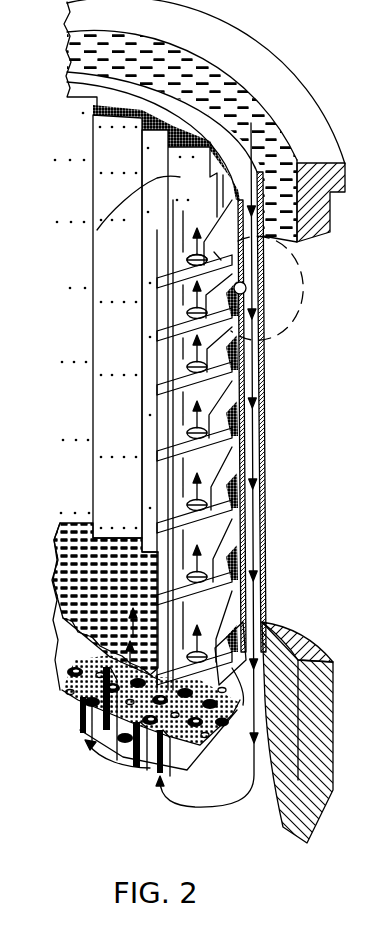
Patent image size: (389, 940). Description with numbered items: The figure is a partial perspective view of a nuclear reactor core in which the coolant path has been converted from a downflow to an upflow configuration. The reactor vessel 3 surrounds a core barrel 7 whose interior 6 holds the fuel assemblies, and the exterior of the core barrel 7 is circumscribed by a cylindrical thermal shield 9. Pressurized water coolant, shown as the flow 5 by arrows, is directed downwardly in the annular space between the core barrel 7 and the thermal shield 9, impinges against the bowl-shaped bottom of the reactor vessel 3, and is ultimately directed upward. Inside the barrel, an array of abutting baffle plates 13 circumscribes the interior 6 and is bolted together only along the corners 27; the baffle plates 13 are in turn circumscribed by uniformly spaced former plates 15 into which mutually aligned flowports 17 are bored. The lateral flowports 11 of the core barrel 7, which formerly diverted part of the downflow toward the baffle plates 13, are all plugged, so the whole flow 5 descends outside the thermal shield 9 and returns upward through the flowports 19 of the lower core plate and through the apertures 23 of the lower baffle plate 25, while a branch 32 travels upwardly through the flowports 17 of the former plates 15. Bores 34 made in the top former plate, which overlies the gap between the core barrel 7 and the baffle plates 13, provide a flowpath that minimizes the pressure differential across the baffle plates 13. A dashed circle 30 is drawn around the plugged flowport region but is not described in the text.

The reactor vessel 3 is at (276, 97).
The flow of liquid coolant 5 is at (261, 137).
The interior of the core barrel 6 is at (80, 330).
The core barrel 7 is at (115, 113).
The thermal shield 9 is at (206, 107).
The lateral flowports 11 is at (247, 291).
The baffle plates 13 is at (153, 193).
The former plates 15 is at (223, 560).
The flowports of the former plates 17 is at (240, 400).
The flowports of the lower core plate 19 is at (140, 760).
The apertures of the lower baffle plate 23 is at (76, 603).
The lower baffle plate 25 is at (58, 549).
The corners of the baffle plates 27 is at (88, 186).
The detail region 30 is at (258, 288).
The branch of the coolant flow 32 is at (213, 634).
The bores 34 is at (197, 261).